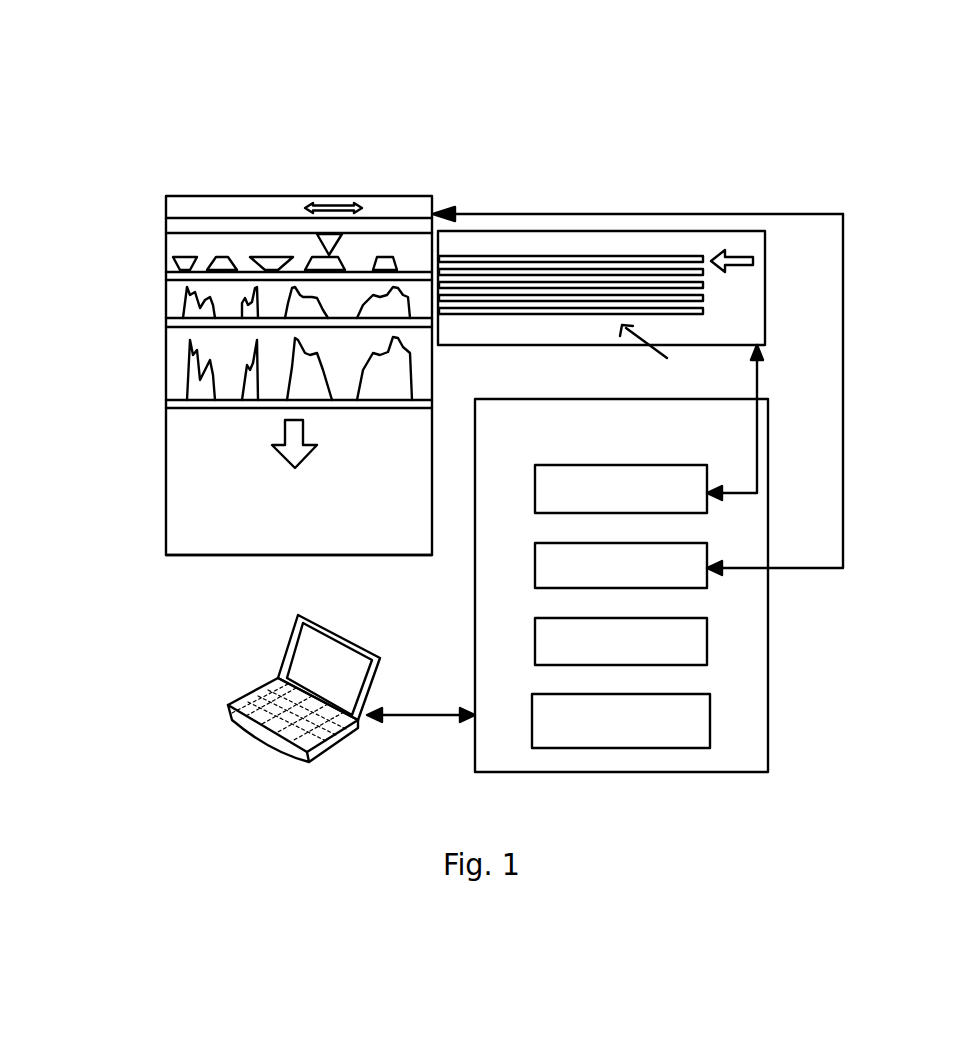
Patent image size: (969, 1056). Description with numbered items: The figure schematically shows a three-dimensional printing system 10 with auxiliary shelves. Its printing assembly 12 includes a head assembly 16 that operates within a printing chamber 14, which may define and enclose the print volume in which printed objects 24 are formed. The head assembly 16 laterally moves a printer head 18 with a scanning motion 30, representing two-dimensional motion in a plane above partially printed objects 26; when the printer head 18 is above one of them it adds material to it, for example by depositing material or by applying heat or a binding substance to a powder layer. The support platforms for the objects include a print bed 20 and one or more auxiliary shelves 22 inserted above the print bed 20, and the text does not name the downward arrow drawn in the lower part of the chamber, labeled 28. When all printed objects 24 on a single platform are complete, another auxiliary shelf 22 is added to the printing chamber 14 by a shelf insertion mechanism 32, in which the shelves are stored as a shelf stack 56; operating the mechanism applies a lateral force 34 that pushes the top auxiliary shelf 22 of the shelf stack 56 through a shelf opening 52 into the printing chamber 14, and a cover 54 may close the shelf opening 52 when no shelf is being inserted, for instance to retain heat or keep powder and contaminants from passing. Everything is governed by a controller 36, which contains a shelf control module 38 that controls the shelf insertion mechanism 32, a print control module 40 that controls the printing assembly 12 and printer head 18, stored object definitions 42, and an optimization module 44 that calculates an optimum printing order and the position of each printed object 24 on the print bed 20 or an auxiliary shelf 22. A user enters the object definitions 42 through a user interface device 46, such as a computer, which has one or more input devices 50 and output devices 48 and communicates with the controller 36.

The three-dimensional printing system 10 is at (632, 107).
The printing assembly 12 is at (200, 166).
The printing chamber 14 is at (165, 457).
The head assembly 16 is at (193, 218).
The printer head 18 is at (316, 243).
The print bed 20 is at (165, 405).
The auxiliary shelves 22 is at (165, 317).
The printed objects 24 is at (187, 378).
The partially printed objects 26 is at (177, 260).
The build direction arrow 28 is at (282, 430).
The scanning motion 30 is at (333, 202).
The shelf insertion mechanism 32 is at (728, 231).
The lateral force 34 is at (730, 255).
The controller 36 is at (768, 627).
The shelf control module 38 is at (572, 465).
The print control module 40 is at (535, 570).
The object definitions 42 is at (537, 642).
The optimization module 44 is at (533, 728).
The user interface device 46 is at (323, 678).
The output devices 48 is at (322, 673).
The input devices 50 is at (277, 717).
The shelf opening 52 is at (440, 258).
The cover 54 is at (428, 259).
The shelf stack 56 is at (669, 354).